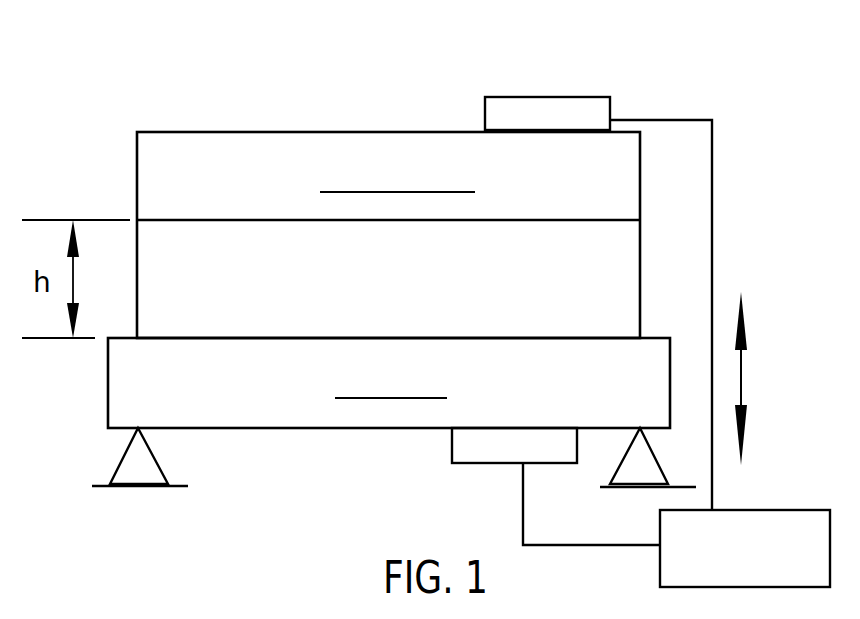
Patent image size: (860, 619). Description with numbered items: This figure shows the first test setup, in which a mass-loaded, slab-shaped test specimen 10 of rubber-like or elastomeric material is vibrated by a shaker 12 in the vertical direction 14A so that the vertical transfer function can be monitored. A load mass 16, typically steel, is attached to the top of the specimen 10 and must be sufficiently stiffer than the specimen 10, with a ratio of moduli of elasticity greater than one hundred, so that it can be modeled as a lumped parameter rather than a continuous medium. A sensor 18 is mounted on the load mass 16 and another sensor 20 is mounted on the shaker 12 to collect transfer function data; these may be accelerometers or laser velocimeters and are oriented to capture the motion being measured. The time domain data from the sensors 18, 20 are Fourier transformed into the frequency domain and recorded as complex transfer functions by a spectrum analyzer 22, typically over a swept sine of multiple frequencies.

The test specimen 10 is at (190, 233).
The shaker 12 is at (138, 398).
The vertical direction 14A is at (742, 377).
The load mass 16 is at (167, 160).
The sensor 18 is at (582, 97).
The sensor 20 is at (470, 464).
The spectrum analyzer 22 is at (660, 552).